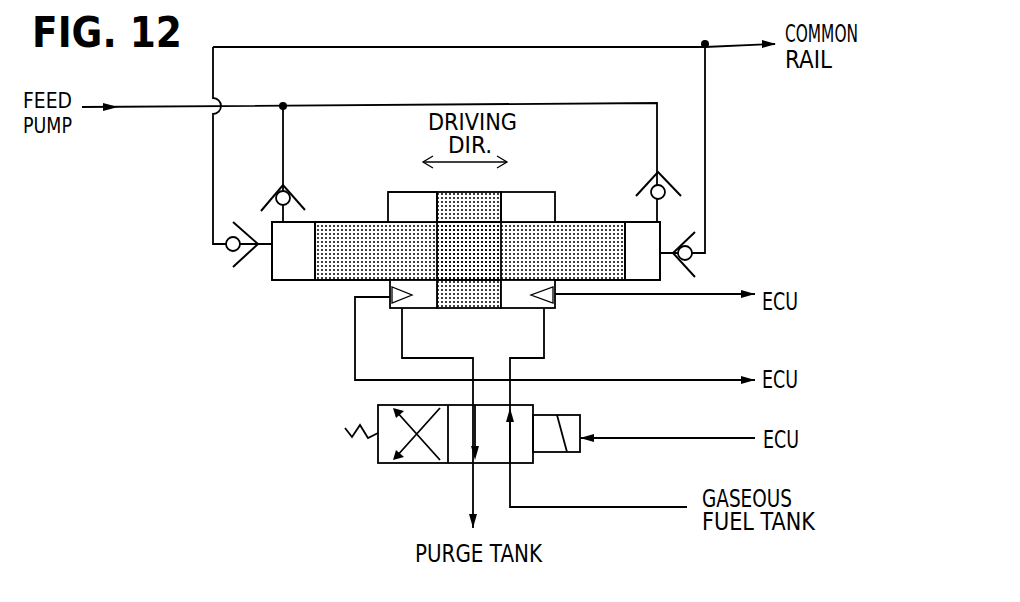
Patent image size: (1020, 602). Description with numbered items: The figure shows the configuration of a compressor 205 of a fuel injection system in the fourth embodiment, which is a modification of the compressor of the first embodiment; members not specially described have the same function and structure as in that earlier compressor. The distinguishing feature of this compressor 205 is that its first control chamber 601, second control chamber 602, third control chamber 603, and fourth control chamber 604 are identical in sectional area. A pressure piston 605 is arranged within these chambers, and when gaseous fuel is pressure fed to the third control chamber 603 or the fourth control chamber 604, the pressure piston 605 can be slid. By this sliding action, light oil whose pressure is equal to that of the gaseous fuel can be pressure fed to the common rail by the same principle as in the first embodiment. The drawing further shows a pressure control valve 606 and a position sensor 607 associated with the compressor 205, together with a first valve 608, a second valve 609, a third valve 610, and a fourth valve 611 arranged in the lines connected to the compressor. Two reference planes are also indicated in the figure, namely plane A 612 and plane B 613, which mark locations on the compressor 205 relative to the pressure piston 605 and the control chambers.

The compressor 205 is at (250, 212).
The first control chamber 601 is at (642, 232).
The second control chamber 602 is at (297, 275).
The third control chamber 603 is at (543, 197).
The fourth control chamber 604 is at (407, 198).
The pressure piston 605 is at (582, 238).
The pressure control valve 606 is at (345, 428).
The position sensor 607 is at (407, 308).
The first valve 608 is at (692, 267).
The second valve 609 is at (665, 180).
The third valve 610 is at (228, 250).
The fourth valve 611 is at (267, 193).
The plane A 612 is at (523, 193).
The plane B 613 is at (422, 193).